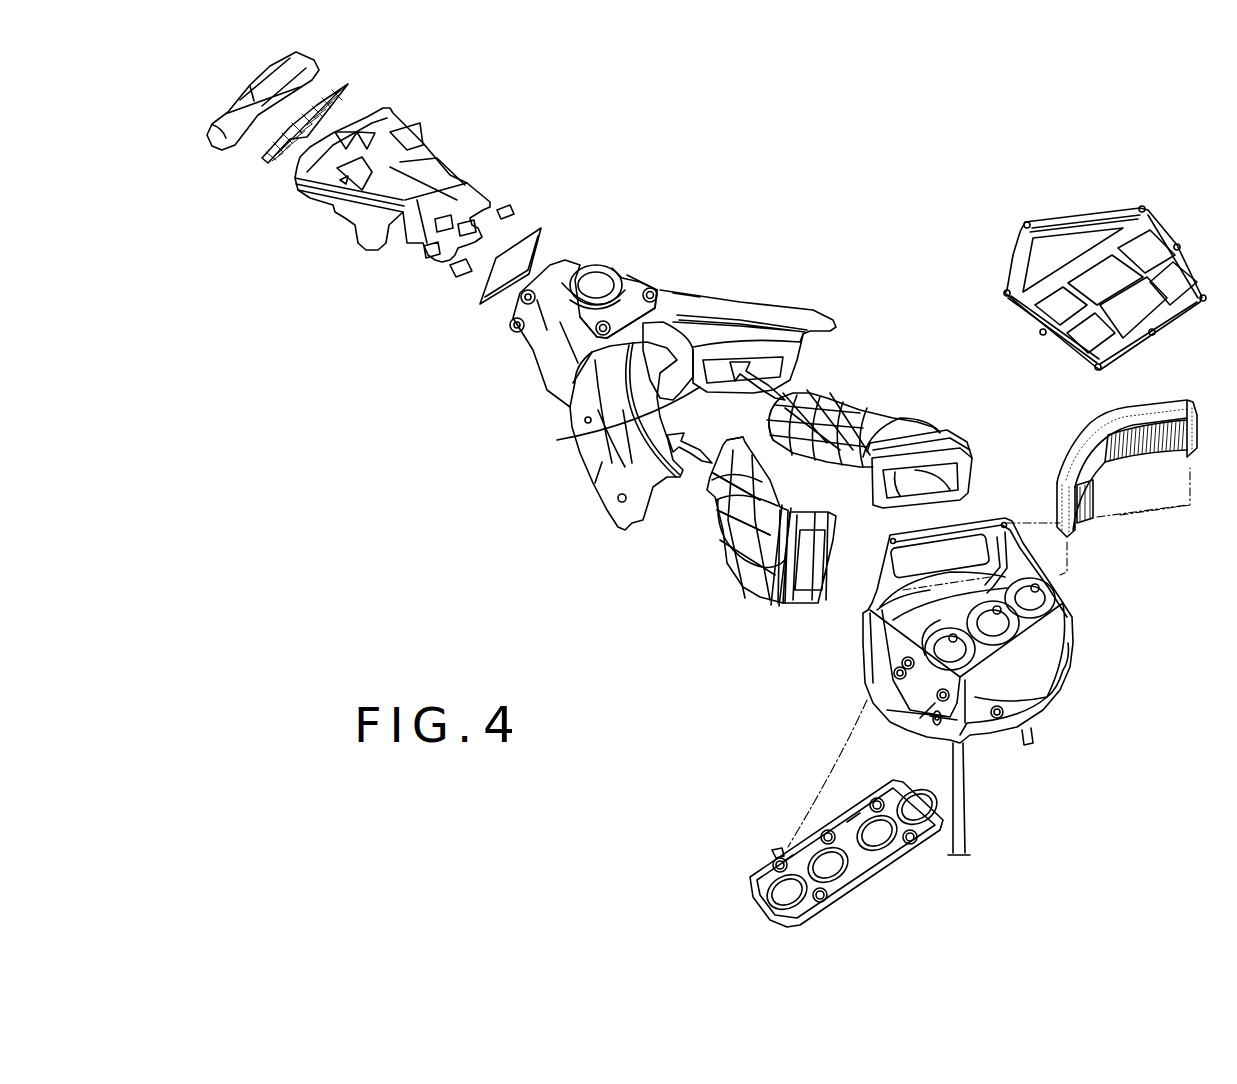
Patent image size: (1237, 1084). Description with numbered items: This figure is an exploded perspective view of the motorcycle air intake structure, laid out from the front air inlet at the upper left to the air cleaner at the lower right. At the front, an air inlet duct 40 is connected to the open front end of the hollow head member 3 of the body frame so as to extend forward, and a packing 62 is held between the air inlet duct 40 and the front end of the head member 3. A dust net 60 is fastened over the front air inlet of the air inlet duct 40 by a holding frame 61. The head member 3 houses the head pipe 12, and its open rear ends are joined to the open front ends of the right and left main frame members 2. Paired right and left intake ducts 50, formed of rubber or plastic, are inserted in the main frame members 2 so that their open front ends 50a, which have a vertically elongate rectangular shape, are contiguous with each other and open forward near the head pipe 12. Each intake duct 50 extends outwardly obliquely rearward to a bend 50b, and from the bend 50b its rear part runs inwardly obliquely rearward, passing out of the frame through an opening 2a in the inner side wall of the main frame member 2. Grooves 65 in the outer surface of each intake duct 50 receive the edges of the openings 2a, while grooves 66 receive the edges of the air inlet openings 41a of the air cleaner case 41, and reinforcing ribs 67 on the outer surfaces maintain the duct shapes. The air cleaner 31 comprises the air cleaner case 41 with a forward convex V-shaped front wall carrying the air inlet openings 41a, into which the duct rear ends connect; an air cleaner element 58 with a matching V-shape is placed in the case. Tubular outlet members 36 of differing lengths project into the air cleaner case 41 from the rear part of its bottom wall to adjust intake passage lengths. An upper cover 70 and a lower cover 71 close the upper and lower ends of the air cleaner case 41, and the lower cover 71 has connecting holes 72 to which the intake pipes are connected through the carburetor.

The main frame member 2 is at (774, 312).
The opening 2a is at (592, 433).
The head member 3 is at (537, 360).
The head pipe 12 is at (596, 272).
The air cleaner 31 is at (851, 699).
The tubular outlet member 36 is at (1030, 606).
The air inlet duct 40 is at (358, 214).
The air cleaner case 41 is at (1030, 683).
The air inlet opening 41a is at (955, 547).
The intake duct 50 is at (889, 392).
The front end 50a is at (773, 407).
The bend 50b is at (918, 420).
The air cleaner element 58 is at (1149, 402).
The dust net 60 is at (267, 150).
The holding frame 61 is at (233, 147).
The packing 62 is at (484, 302).
The groove 65 is at (940, 437).
The groove 66 is at (973, 473).
The reinforcing rib 67 is at (822, 472).
The upper cover 70 is at (1015, 253).
The lower cover 71 is at (770, 860).
The connecting hole 72 is at (885, 843).